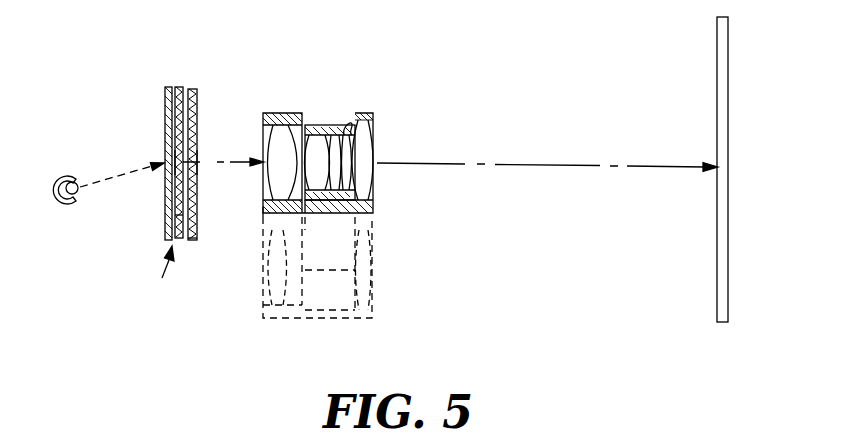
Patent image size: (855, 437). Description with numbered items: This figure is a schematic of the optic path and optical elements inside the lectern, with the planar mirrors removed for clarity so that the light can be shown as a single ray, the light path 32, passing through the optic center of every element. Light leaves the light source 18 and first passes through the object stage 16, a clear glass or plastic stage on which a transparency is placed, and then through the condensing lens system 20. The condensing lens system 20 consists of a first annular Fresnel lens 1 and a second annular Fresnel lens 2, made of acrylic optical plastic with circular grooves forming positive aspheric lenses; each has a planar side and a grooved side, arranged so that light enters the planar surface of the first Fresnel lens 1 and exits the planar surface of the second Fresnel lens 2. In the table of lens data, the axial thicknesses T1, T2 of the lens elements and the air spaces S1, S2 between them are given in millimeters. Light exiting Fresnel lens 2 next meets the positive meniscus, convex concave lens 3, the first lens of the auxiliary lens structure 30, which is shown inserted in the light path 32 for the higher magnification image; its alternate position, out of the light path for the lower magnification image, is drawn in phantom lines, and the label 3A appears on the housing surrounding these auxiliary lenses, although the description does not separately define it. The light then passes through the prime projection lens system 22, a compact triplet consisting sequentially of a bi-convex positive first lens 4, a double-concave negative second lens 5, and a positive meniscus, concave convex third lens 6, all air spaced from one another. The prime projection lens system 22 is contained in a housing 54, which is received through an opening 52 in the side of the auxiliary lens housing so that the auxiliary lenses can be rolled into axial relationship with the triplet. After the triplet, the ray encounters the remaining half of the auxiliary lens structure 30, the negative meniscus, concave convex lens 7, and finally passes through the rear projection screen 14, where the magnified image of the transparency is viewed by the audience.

The first annular Fresnel lens 1 is at (177, 95).
The second annular Fresnel lens 2 is at (193, 90).
The positive meniscus lens 3 is at (270, 143).
The first lens alternate position 3A is at (263, 207).
The first lens 4 is at (312, 132).
The second lens 5 is at (329, 135).
The third lens 6 is at (349, 125).
The negative meniscus lens 7 is at (375, 130).
The rear projection screen 14 is at (728, 80).
The glass object stage 16 is at (166, 92).
The light source 18 is at (59, 165).
The condensing lens system 20 is at (159, 274).
The prime projection lens system 22 is at (321, 114).
The auxiliary lens structure 30 is at (268, 102).
The light path 32 is at (106, 175).
The opening 52 is at (303, 113).
The housing 54 is at (330, 213).
The air space S1 is at (185, 163).
The air space S2 is at (220, 163).
The axial thickness T1 is at (175, 215).
The axial thickness T2 is at (190, 238).